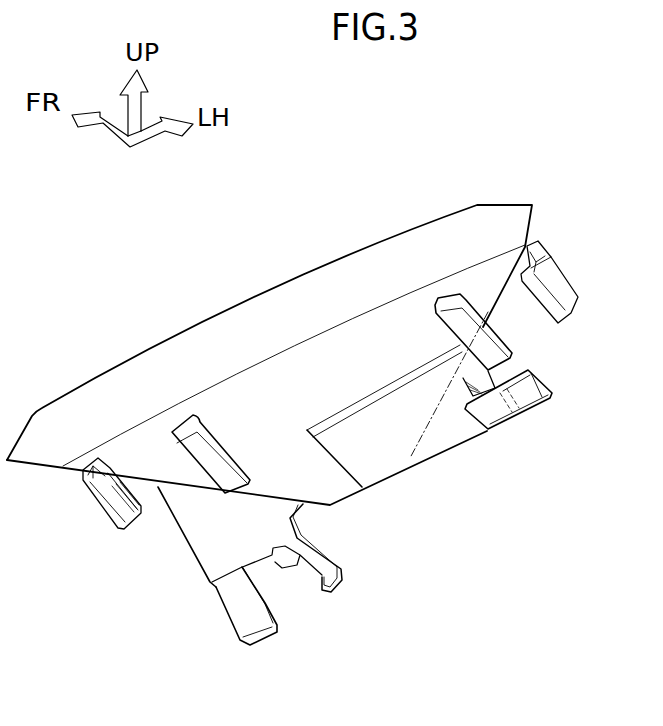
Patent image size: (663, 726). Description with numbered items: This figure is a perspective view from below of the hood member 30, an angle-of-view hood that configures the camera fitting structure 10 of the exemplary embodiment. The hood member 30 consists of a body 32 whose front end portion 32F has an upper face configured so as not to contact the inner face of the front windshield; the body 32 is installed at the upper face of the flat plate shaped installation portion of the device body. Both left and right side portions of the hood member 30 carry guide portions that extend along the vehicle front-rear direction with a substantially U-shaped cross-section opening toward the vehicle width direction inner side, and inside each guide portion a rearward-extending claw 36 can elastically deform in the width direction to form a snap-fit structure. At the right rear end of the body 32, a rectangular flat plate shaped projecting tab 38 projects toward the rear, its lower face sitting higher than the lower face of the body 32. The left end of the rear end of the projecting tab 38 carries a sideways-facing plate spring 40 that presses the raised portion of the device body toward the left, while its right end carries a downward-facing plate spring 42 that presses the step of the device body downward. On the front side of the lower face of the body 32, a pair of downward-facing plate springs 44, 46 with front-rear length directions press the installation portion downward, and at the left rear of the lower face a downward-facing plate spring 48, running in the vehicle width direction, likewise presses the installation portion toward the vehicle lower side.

The camera fitting structure 10 is at (315, 387).
The hood member 30 is at (277, 327).
The body 32 is at (343, 482).
The front end portion 32F is at (207, 334).
The claw 36 is at (143, 514).
The projecting tab 38 is at (235, 538).
The sideways-facing plate spring 40 is at (340, 584).
The downward-facing plate spring 42 is at (258, 636).
The downward-facing plate spring 44 is at (467, 333).
The downward-facing plate spring 46 is at (217, 460).
The downward-facing plate spring 48 is at (522, 398).